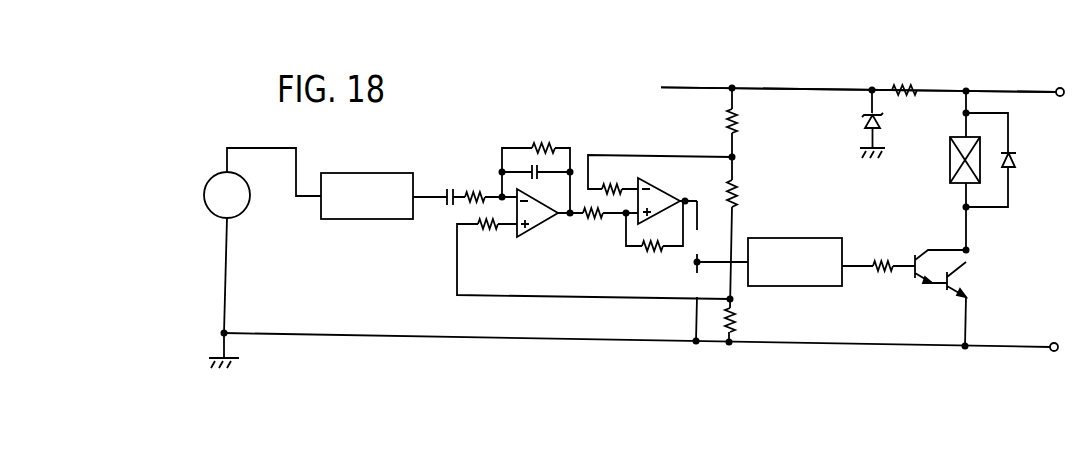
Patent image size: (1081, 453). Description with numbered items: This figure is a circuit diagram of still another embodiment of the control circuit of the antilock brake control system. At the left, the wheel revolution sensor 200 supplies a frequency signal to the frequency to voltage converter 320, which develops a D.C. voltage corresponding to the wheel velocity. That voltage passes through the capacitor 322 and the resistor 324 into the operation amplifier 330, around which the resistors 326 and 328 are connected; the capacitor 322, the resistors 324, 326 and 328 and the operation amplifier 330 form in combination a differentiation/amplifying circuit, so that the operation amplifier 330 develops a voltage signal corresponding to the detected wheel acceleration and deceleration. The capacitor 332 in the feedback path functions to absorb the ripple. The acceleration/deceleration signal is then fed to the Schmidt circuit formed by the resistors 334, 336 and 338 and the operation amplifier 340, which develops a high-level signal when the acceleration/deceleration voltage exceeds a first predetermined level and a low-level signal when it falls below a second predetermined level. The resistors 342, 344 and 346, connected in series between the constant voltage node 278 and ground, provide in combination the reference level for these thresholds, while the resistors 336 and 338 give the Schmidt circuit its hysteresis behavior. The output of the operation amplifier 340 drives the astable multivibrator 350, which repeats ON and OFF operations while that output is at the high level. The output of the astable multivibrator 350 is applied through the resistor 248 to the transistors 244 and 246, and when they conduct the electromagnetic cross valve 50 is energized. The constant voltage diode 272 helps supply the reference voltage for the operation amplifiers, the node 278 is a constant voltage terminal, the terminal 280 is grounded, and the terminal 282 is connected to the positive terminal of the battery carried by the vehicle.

The wheel revolution sensor 200 is at (204, 198).
The frequency to voltage converter 320 is at (353, 186).
The capacitor 322 is at (450, 185).
The resistor 324 is at (479, 190).
The resistor 326 is at (540, 143).
The resistor 328 is at (488, 228).
The operation amplifier 330 is at (540, 223).
The capacitor 332 is at (543, 168).
The resistor 334 is at (617, 183).
The resistor 336 is at (593, 226).
The resistor 338 is at (648, 257).
The operation amplifier 340 is at (667, 207).
The resistor 342 is at (743, 120).
The resistor 344 is at (742, 192).
The resistor 346 is at (738, 315).
The astable multivibrator 350 is at (823, 248).
The node 278 is at (745, 74).
The constant voltage diode 272 is at (863, 118).
The electromagnetic cross valve 50 is at (979, 153).
The terminal 282 is at (1057, 87).
The terminal 280 is at (1057, 352).
The resistor 248 is at (882, 280).
The transistor 244 is at (920, 287).
The transistor 246 is at (971, 277).